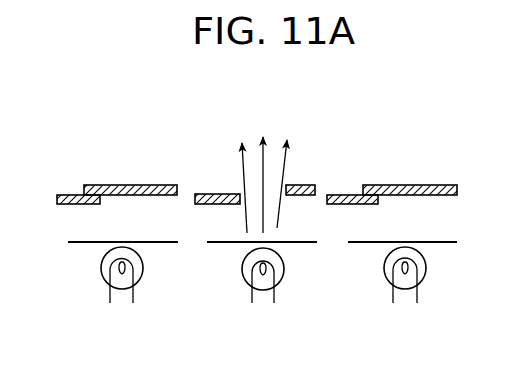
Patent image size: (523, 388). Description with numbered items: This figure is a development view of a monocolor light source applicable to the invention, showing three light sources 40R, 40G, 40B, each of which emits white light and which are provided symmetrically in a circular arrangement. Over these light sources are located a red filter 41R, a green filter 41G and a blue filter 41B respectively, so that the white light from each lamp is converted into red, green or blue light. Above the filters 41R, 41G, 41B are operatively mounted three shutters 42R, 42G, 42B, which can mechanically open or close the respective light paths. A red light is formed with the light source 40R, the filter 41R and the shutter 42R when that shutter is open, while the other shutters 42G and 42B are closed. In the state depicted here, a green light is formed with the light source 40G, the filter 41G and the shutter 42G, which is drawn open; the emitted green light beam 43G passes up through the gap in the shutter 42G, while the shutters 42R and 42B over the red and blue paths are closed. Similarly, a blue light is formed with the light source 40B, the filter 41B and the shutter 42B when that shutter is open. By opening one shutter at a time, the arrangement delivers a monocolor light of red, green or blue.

The light source 40R is at (143, 295).
The light source 40G is at (288, 292).
The light source 40B is at (427, 290).
The red filter 41R is at (163, 243).
The green filter 41G is at (304, 243).
The blue filter 41B is at (445, 243).
The shutter 42R is at (100, 178).
The shutter 42G is at (298, 177).
The shutter 42B is at (412, 178).
The green light beam 43G is at (242, 140).